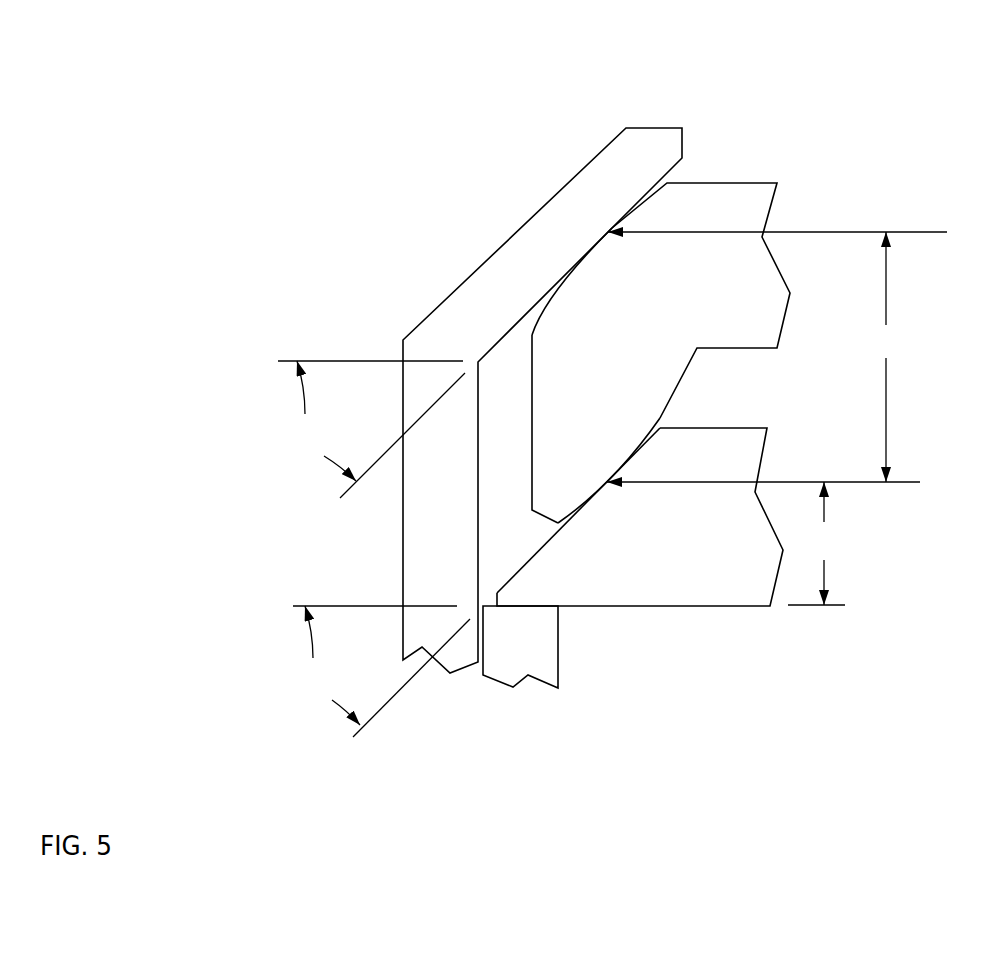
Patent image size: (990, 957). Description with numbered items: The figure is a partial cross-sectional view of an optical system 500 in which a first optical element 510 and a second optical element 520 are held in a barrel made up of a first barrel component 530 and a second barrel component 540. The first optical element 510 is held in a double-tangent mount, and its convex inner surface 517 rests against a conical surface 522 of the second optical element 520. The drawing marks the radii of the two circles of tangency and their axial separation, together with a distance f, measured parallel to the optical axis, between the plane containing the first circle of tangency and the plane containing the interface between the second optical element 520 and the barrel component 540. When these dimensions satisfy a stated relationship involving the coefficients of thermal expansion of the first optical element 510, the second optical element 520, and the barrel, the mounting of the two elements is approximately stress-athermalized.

The optical system 500 is at (258, 75).
The first optical element 510 is at (596, 321).
The convex inner surface 517 is at (660, 411).
The second optical element 520 is at (671, 583).
The conical surface 522 is at (547, 547).
The first barrel component 530 is at (518, 228).
The second barrel component 540 is at (513, 687).